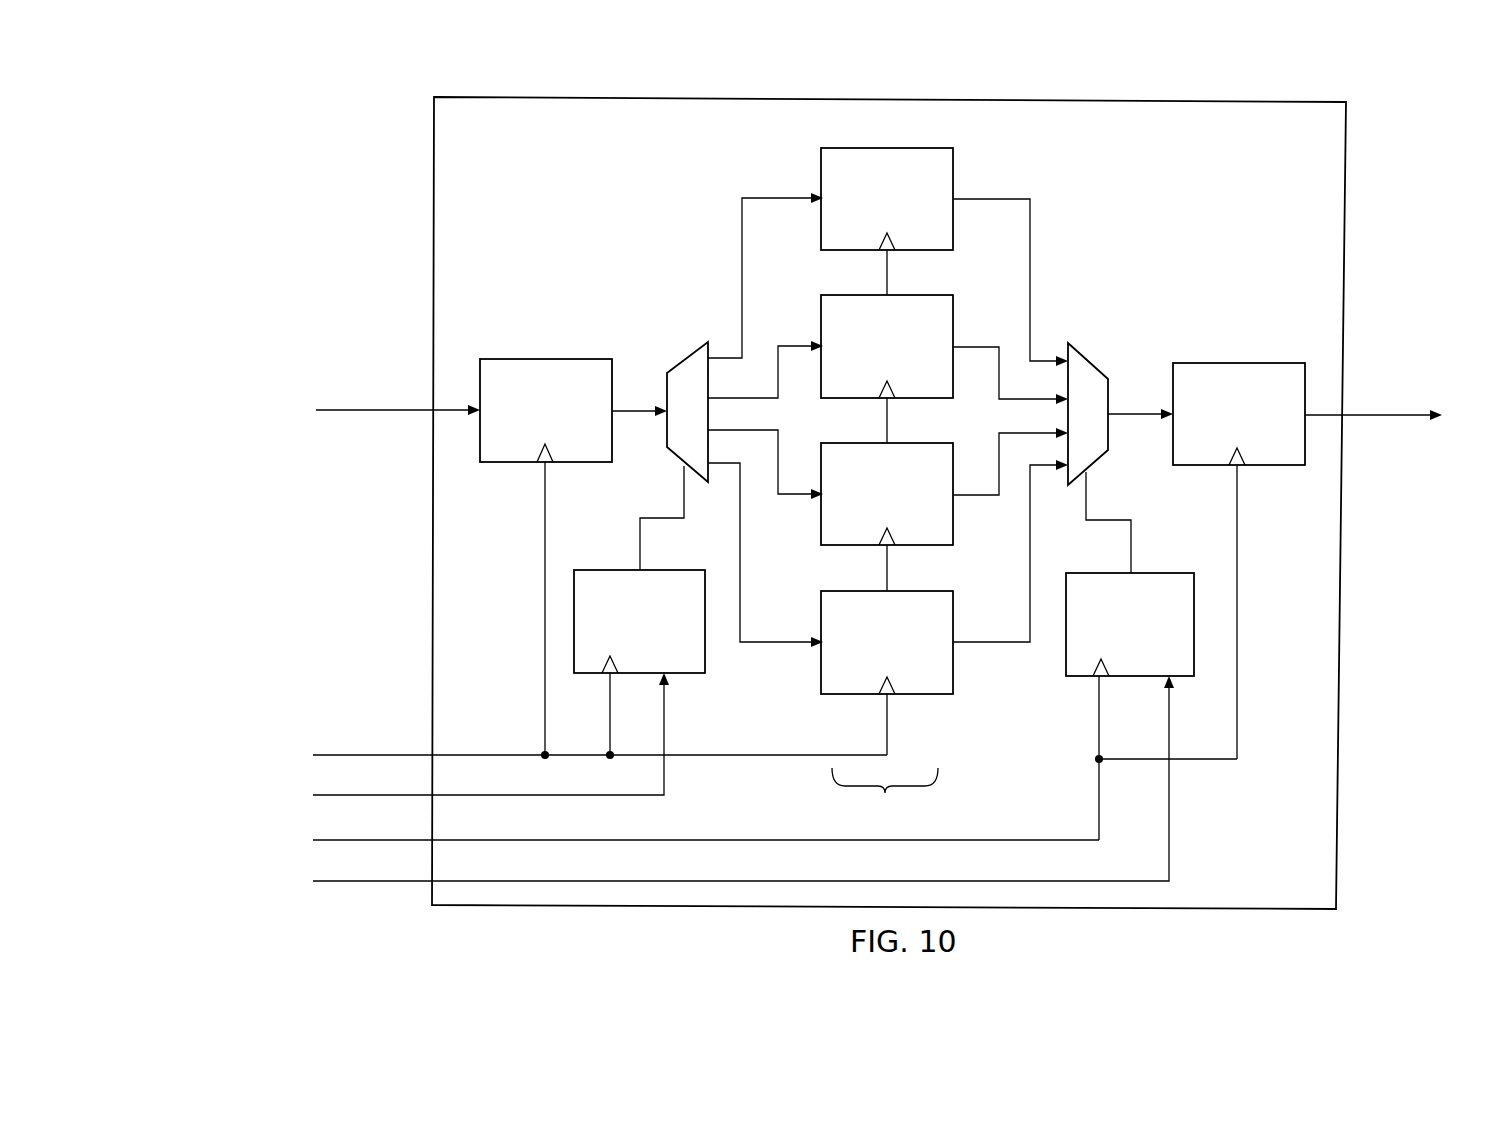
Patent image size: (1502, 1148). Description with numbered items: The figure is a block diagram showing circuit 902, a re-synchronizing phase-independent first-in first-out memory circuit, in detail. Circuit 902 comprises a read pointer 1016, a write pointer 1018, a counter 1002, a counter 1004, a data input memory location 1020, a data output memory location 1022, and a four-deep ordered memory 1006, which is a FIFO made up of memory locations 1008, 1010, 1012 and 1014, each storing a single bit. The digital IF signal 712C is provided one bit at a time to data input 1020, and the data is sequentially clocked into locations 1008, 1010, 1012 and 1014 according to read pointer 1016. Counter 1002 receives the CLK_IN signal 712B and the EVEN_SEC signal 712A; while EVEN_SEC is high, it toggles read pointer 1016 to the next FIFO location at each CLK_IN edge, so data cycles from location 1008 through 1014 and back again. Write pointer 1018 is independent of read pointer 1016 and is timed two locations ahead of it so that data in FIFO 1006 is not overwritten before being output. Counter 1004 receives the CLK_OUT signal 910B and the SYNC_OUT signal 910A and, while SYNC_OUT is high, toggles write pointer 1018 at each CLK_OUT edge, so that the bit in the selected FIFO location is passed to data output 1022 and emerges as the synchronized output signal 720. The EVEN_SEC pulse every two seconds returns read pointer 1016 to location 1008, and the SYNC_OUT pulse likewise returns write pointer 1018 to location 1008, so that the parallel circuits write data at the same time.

The circuit 902 is at (1281, 909).
The data input memory location 1020 is at (532, 359).
The data output memory location 1022 is at (1258, 363).
The read pointer 1016 is at (707, 343).
The write pointer 1018 is at (1079, 348).
The memory location 1008 is at (912, 148).
The memory location 1010 is at (907, 295).
The memory location 1012 is at (907, 443).
The memory location 1014 is at (907, 591).
The four-deep ordered memory 1006 is at (885, 758).
The counter 1002 is at (686, 673).
The counter 1004 is at (1079, 676).
The digital IF signal 712C is at (366, 410).
The CLK_IN signal 712B is at (345, 755).
The EVEN_SEC signal 712A is at (345, 795).
The CLK_OUT signal 910B is at (345, 840).
The SYNC_OUT signal 910A is at (345, 881).
The output signal 720 is at (1397, 416).